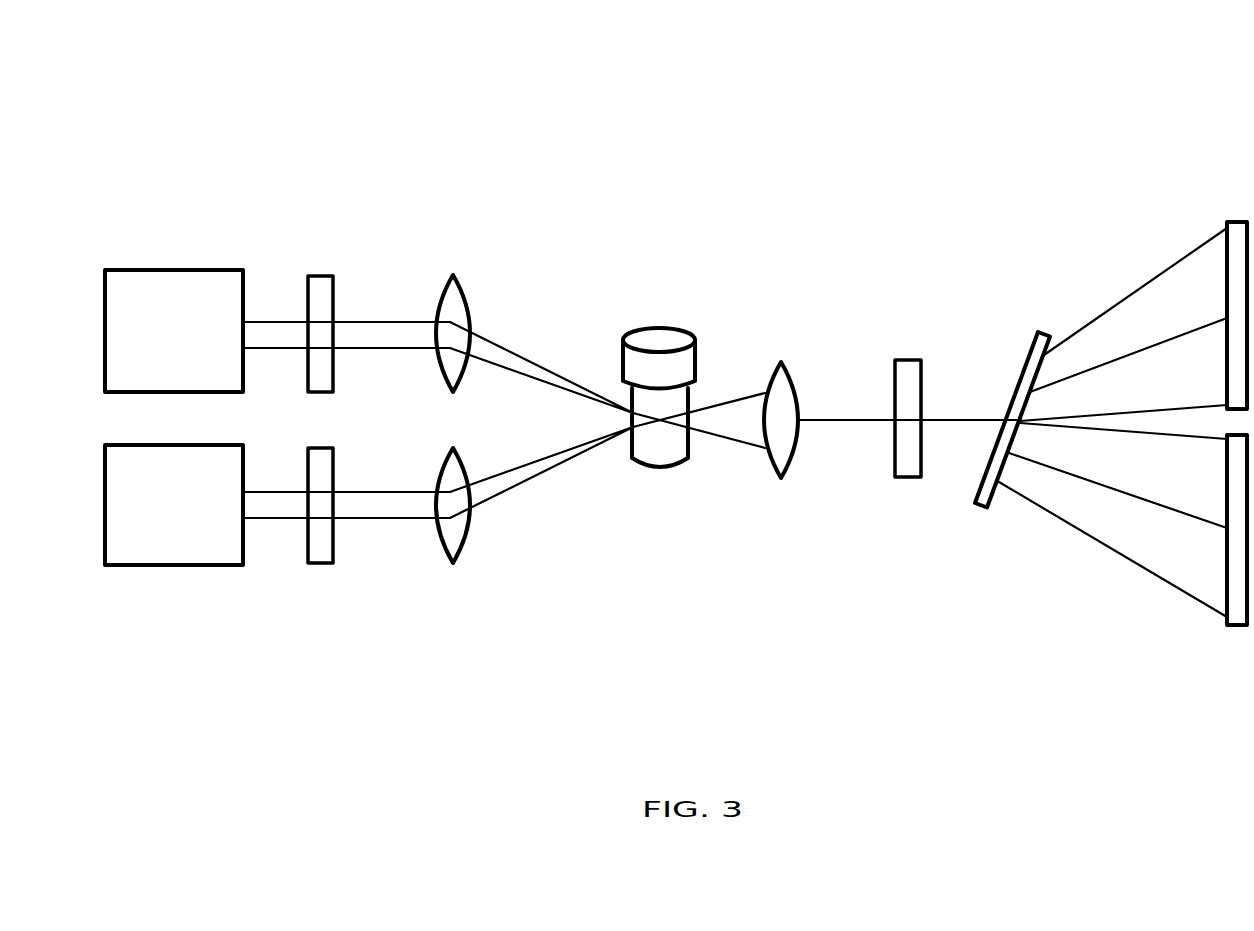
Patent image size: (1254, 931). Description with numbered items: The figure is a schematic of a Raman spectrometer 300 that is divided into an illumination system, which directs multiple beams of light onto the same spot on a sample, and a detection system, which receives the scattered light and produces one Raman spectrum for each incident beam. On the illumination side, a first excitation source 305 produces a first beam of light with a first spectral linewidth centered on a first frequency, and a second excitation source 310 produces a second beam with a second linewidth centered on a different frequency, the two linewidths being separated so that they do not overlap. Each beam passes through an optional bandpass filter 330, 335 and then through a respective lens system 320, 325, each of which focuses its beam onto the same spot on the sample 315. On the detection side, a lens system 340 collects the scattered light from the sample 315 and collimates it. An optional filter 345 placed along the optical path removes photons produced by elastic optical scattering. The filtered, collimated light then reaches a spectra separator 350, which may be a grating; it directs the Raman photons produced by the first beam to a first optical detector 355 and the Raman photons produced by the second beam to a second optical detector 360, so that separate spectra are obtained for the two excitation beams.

The Raman spectrometer 300 is at (1056, 58).
The first excitation source 305 is at (203, 270).
The second excitation source 310 is at (203, 566).
The sample 315 is at (657, 328).
The lens system 320 is at (452, 275).
The lens system 325 is at (452, 564).
The bandpass filter 330 is at (322, 276).
The bandpass filter 335 is at (322, 564).
The lens system 340 is at (781, 362).
The filter 345 is at (908, 360).
The spectra separator 350 is at (1041, 332).
The first optical detector 355 is at (1237, 222).
The second optical detector 360 is at (1237, 626).